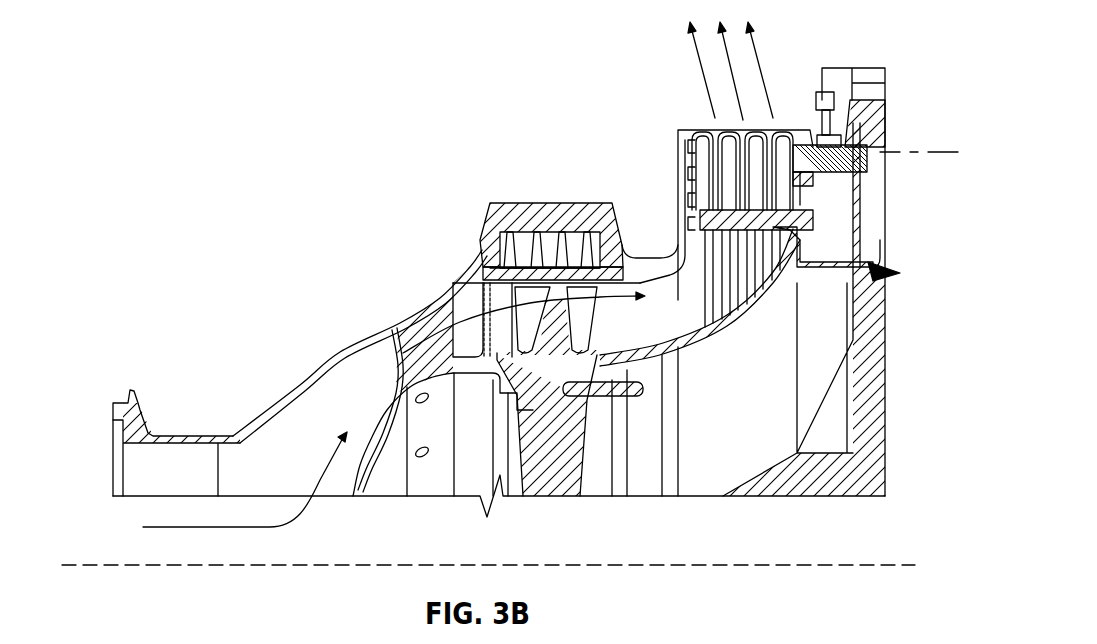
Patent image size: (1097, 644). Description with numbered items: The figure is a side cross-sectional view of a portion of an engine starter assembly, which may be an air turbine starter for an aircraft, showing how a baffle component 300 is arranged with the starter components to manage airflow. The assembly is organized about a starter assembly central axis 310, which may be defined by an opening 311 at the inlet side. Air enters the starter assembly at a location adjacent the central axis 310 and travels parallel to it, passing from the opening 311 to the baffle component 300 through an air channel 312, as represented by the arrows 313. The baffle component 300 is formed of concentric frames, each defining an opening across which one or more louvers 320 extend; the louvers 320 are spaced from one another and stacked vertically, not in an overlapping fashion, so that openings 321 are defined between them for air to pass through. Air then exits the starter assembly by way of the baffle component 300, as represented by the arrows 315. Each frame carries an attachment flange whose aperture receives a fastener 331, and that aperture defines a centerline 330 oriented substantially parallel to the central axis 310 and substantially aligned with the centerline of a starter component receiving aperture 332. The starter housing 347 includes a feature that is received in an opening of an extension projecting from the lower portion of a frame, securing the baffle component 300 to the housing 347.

The baffle component 300 is at (678, 141).
The starter assembly central axis 310 is at (888, 563).
The opening 311 is at (134, 378).
The air channel 312 is at (333, 398).
The arrows 313 is at (447, 330).
The arrows 315 is at (760, 89).
The louvers 320 is at (785, 182).
The openings 321 is at (733, 338).
The centerline 330 is at (915, 150).
The fastener 331 is at (867, 165).
The starter component receiving aperture 332 is at (867, 127).
The starter housing 347 is at (502, 201).